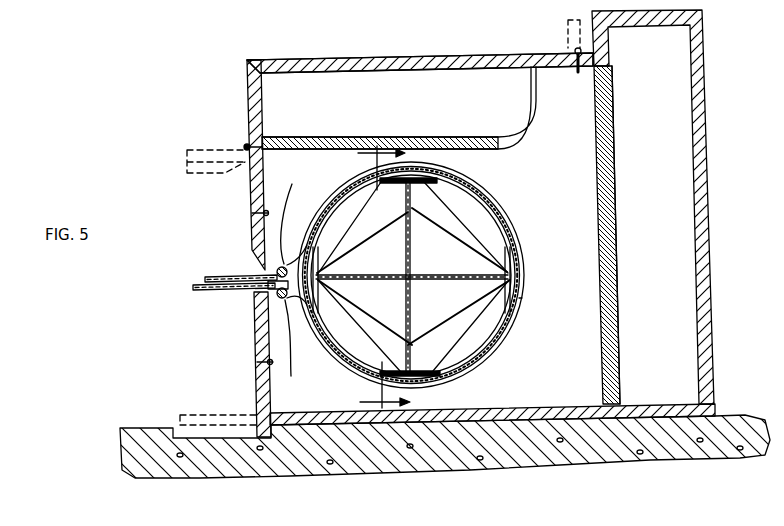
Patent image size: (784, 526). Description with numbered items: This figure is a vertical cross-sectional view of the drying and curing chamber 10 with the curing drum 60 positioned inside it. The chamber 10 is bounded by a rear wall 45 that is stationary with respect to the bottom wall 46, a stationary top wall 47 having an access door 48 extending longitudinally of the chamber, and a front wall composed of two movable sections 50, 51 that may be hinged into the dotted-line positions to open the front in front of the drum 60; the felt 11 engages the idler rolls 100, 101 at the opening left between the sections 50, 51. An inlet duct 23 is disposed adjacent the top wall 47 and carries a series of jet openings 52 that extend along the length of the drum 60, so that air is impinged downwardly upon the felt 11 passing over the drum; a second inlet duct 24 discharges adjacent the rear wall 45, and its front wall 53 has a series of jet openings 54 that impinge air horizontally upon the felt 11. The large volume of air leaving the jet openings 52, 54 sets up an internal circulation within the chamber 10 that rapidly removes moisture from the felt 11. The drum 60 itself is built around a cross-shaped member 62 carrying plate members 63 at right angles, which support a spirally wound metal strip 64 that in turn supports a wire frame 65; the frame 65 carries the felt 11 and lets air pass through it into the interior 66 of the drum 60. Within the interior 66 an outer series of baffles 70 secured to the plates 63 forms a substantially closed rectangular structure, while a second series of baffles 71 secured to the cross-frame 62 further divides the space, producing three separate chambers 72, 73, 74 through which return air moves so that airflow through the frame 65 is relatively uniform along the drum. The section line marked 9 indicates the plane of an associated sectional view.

The section line 9- 9 is at (394, 278).
The drying and curing chamber 10 is at (350, 51).
The felt 11 is at (216, 290).
The inlet duct 23 is at (554, 133).
The inlet duct 24 is at (674, 203).
The rear wall 45 is at (704, 160).
The bottom wall 46 is at (533, 410).
The top wall 47 is at (405, 58).
The access door 48 is at (553, 53).
The movable section 50 is at (250, 200).
The movable section 51 is at (256, 344).
The jet openings 52 is at (392, 134).
The front wall 53 is at (613, 151).
The jet openings 54 is at (608, 283).
The curing drum 60 is at (519, 232).
The cross-shaped member 62 is at (416, 314).
The plate members 63 is at (514, 261).
The spirally wound metal strip 64 is at (462, 182).
The wire frame 65 is at (521, 298).
The interior 66 is at (481, 226).
The outer series of baffles 70 is at (403, 207).
The second series of baffles 71 is at (386, 237).
The chamber 72 is at (396, 269).
The chamber 73 is at (355, 269).
The chamber 74 is at (341, 241).
The idler roll 100 is at (301, 216).
The band end 101 is at (303, 344).